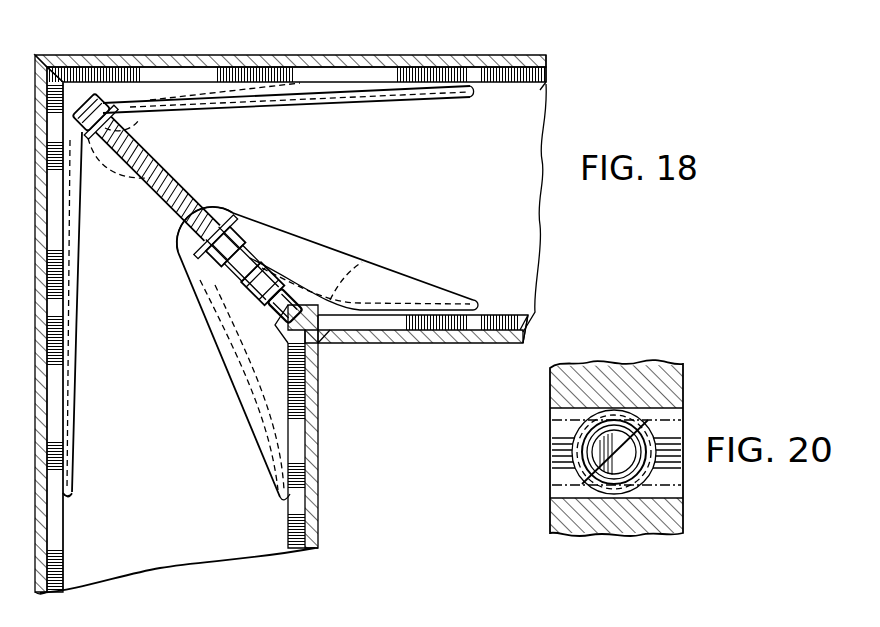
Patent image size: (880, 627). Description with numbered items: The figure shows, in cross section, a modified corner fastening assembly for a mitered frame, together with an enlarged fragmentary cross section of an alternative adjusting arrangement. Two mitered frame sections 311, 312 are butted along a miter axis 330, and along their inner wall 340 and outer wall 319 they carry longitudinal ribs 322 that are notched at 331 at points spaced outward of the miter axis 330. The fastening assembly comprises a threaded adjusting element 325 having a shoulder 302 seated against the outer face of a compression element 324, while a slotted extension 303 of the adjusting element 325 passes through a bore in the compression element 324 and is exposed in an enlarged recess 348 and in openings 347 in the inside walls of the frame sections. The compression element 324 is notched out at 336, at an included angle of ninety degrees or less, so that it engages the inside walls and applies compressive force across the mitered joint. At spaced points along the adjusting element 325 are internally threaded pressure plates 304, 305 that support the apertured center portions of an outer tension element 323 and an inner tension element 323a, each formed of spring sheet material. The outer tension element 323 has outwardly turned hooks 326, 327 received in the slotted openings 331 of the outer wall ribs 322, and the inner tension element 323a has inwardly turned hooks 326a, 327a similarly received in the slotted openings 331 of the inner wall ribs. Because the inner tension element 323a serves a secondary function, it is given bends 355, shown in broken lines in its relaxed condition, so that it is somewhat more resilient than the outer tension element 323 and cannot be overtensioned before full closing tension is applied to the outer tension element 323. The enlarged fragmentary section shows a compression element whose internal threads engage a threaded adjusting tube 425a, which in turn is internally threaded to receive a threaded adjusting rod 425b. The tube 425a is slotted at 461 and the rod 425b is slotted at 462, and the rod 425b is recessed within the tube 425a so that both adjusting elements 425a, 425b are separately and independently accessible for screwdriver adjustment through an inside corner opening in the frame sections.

In FIG. 18, the shoulder 302 is at (263, 252).
In FIG. 18, the slotted extension 303 is at (248, 308).
In FIG. 18, the pressure plate 304 is at (114, 118).
In FIG. 18, the pressure plate 305 is at (180, 250).
In FIG. 18, the mitered frame section 311 is at (520, 229).
In FIG. 18, the mitered frame section 312 is at (222, 552).
In FIG. 18, the outer wall 319 is at (403, 58).
In FIG. 18, the longitudinal rib 322 is at (545, 92).
In FIG. 18, the outer tension element 323 is at (82, 242).
In FIG. 18, the inner tension element 323a is at (248, 214).
In FIG. 18, the compression element 324 is at (250, 263).
In FIG. 18, the threaded adjusting element 325 is at (170, 180).
In FIG. 18, the outwardly turned hook 326 is at (72, 498).
In FIG. 18, the inwardly turned hook 326a is at (280, 508).
In FIG. 18, the outwardly turned hook 327 is at (473, 97).
In FIG. 18, the inwardly turned hook 327a is at (483, 303).
In FIG. 18, the miter axis 330 is at (88, 108).
In FIG. 18, the notch 331 is at (483, 90).
In FIG. 18, the notch 336 is at (337, 333).
In FIG. 18, the inner wall 340 is at (441, 343).
In FIG. 18, the opening 347 is at (320, 352).
In FIG. 18, the enlarged recess 348 is at (252, 332).
In FIG. 18, the bend 355 is at (362, 292).
In FIG. 20, the threaded adjusting tube 425a is at (655, 473).
In FIG. 20, the threaded adjusting rod 425b is at (597, 458).
In FIG. 20, the slot 461 is at (638, 432).
In FIG. 20, the slot 462 is at (580, 445).